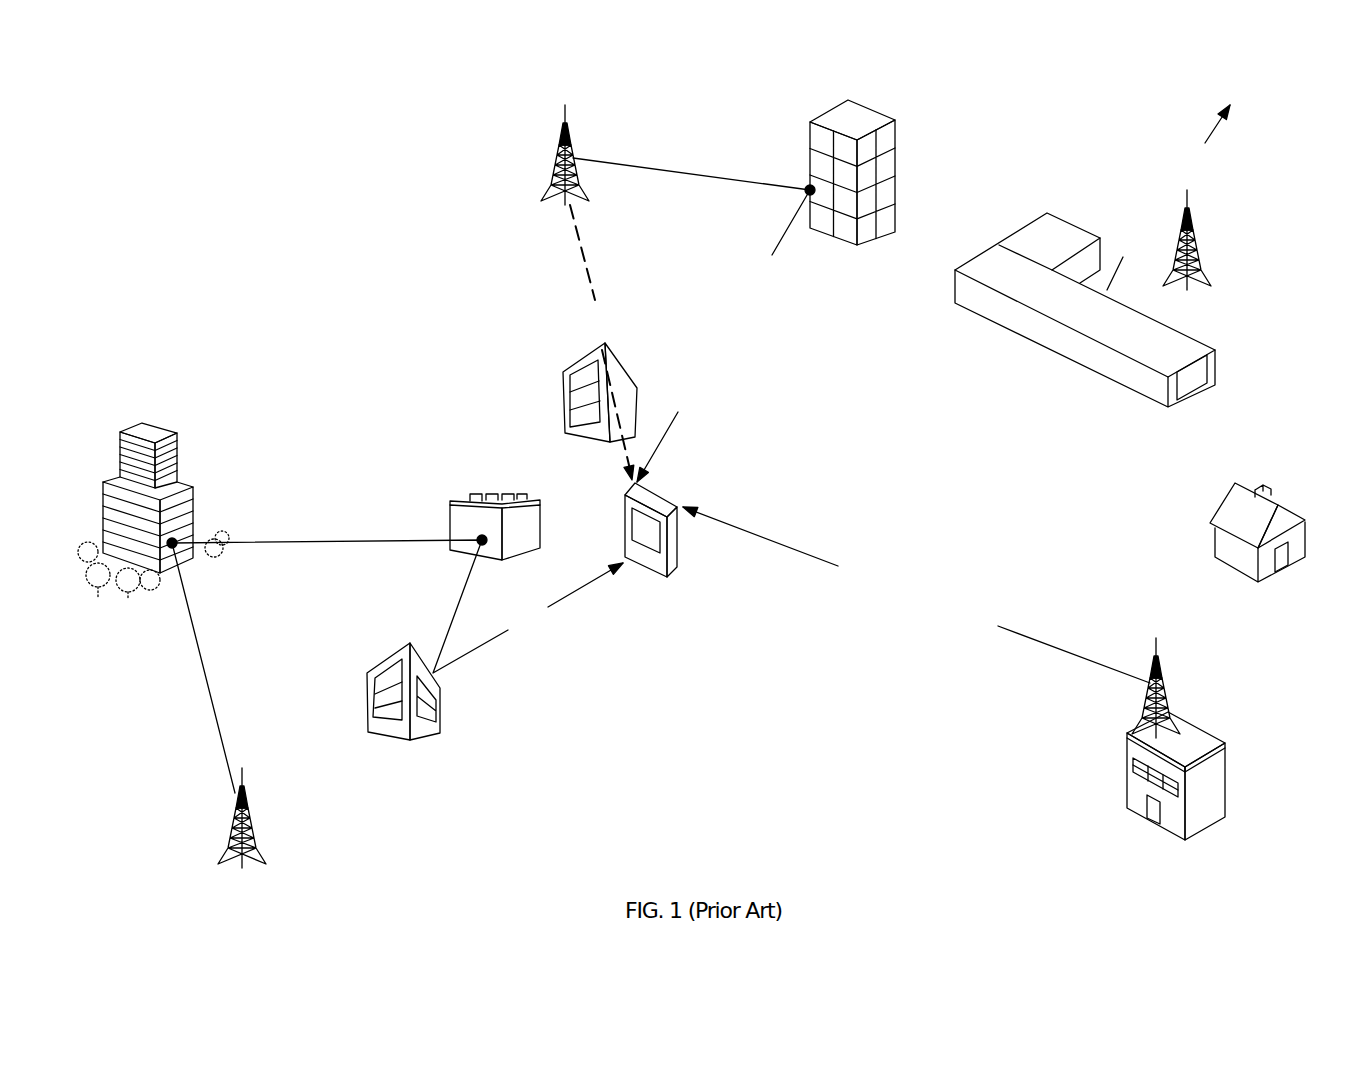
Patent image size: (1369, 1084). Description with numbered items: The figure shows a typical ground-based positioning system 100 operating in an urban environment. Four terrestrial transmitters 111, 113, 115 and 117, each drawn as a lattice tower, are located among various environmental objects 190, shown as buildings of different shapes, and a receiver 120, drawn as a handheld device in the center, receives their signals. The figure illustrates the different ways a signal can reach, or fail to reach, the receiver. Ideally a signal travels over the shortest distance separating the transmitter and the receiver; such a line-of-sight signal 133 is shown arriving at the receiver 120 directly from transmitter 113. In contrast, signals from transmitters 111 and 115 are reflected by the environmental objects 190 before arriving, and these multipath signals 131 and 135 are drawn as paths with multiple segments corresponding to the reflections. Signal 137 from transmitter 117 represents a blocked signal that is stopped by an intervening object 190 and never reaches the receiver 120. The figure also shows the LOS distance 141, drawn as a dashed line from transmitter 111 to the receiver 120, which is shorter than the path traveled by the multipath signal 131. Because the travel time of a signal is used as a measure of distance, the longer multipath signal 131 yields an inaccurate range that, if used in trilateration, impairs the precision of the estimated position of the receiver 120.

The ground-based positioning system 100 is at (132, 128).
The terrestrial transmitter 111 is at (562, 142).
The terrestrial transmitter 113 is at (1165, 672).
The terrestrial transmitter 115 is at (238, 793).
The terrestrial transmitter 117 is at (1192, 228).
The receiver 120 is at (673, 567).
The multipath signal 131 is at (691, 320).
The line-of-sight signal 133 is at (916, 595).
The multipath signal 135 is at (397, 606).
The blocked signal 137 is at (1168, 197).
The LOS distance 141 is at (602, 342).
The environmental objects 190 is at (808, 132).